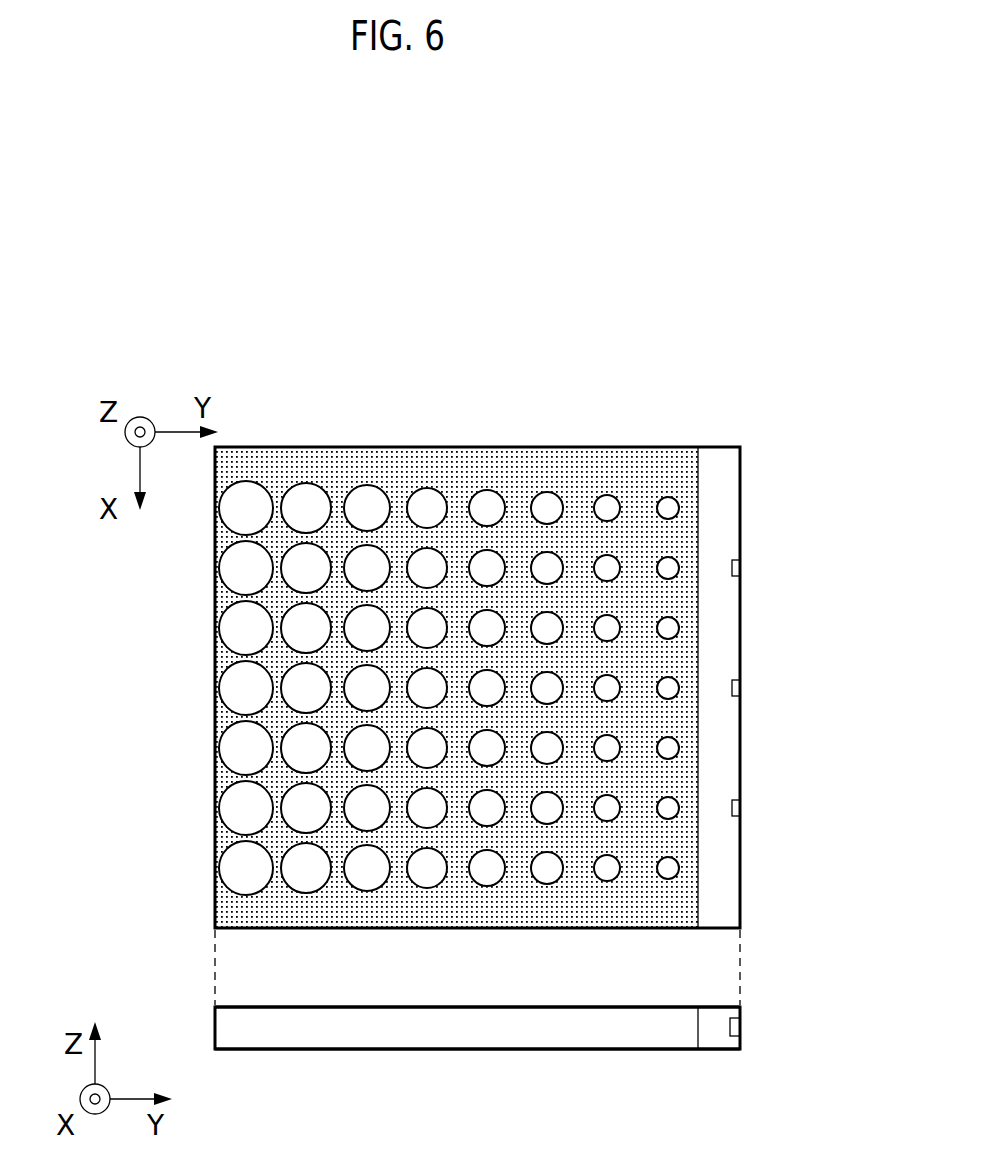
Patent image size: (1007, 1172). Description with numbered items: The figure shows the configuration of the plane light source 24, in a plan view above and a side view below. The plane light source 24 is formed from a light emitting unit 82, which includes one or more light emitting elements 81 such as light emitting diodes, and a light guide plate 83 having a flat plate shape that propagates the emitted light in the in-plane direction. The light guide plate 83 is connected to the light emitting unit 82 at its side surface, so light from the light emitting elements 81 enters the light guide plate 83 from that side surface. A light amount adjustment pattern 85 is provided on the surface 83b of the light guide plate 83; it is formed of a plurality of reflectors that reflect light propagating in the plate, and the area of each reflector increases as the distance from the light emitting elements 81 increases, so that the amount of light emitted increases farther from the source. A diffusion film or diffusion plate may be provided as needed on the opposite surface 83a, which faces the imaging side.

The plane light source 24 is at (150, 711).
The light emitting element 81 is at (740, 568).
The light emitting unit 82 is at (718, 455).
The light guide plate 83 is at (263, 1042).
The surface 83a is at (477, 979).
The surface 83b is at (477, 1082).
The light amount adjustment pattern 85 is at (227, 872).